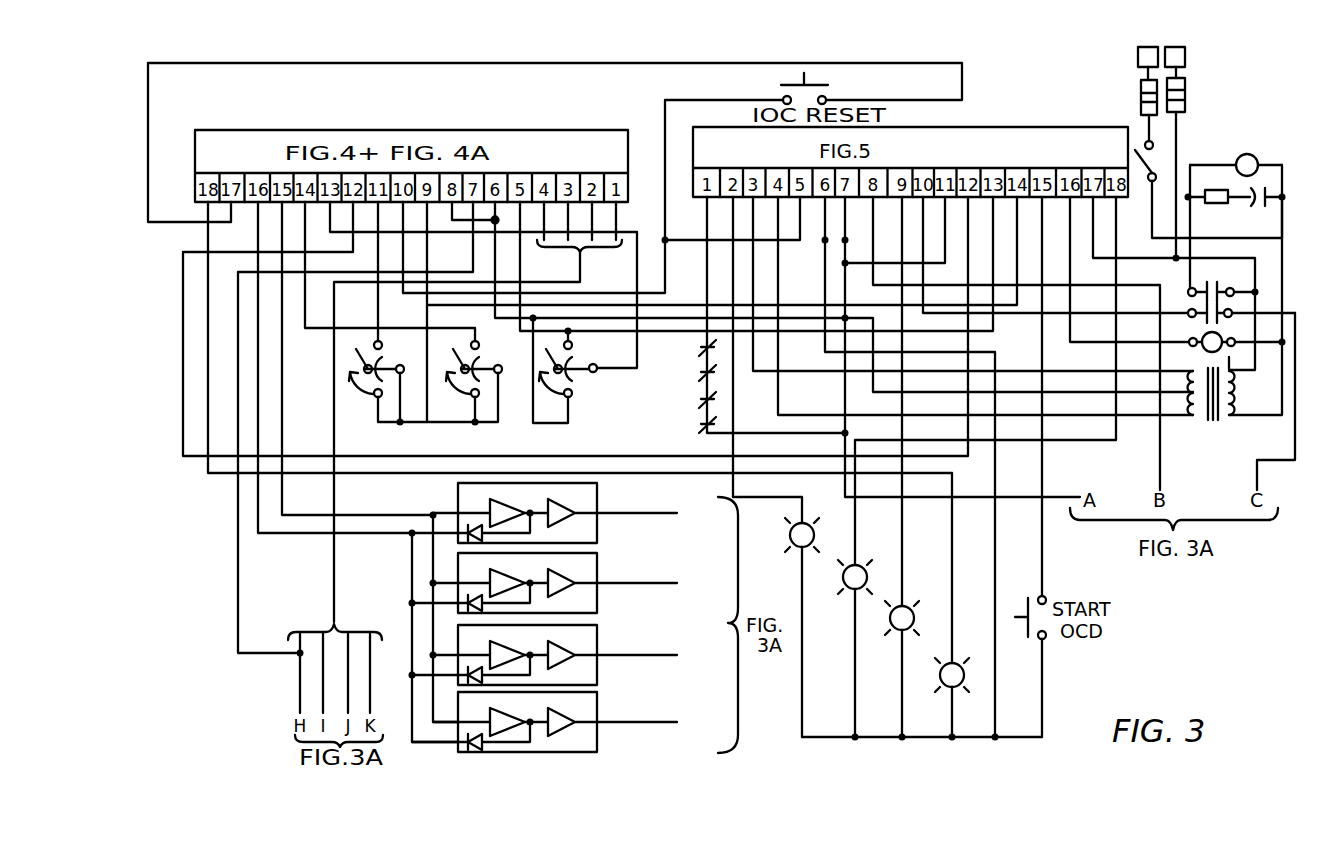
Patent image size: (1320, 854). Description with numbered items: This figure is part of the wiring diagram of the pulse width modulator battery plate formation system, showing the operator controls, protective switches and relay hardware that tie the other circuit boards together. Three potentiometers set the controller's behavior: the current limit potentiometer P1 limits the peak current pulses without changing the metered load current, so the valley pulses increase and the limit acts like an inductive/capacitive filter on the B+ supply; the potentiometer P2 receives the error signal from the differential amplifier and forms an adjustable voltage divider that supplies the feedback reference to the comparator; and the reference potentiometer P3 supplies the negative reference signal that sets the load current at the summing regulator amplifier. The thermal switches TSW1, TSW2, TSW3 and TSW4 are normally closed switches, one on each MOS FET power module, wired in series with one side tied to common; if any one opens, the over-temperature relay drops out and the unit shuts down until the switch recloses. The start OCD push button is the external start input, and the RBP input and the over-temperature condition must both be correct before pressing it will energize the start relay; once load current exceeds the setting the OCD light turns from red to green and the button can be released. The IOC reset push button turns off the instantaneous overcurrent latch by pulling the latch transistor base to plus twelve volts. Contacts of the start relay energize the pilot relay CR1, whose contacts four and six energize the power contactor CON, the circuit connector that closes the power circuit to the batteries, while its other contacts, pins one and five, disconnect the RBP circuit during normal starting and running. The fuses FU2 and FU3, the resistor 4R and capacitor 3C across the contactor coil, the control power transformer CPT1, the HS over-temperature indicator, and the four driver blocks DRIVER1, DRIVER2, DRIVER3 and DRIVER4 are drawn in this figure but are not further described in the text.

The current limit potentiometer P1 is at (423, 377).
The potentiometer P2 is at (477, 377).
The reference potentiometer P3 is at (567, 370).
The thermal switch TSW1 is at (677, 349).
The thermal switch TSW2 is at (677, 374).
The thermal switch TSW3 is at (677, 400).
The thermal switch TSW4 is at (677, 426).
The fuse FU2 is at (1126, 114).
The fuse FU3 is at (1207, 152).
The power contactor CON is at (1236, 156).
The resistor 4R is at (1220, 185).
The capacitor 3C is at (1262, 210).
The pilot relay CR1 is at (1241, 322).
The control power transformer CPT1 is at (1201, 404).
The high speed / over temperature lamp HS is at (782, 526).
The start OCD push button OCD is at (838, 577).
The RBP input RBP is at (914, 611).
The IOC reset push button IOC is at (962, 666).
The driver 1 DRIVER1 is at (558, 516).
The driver 2 DRIVER2 is at (568, 586).
The driver 3 DRIVER3 is at (568, 658).
The driver 4 DRIVER4 is at (568, 725).